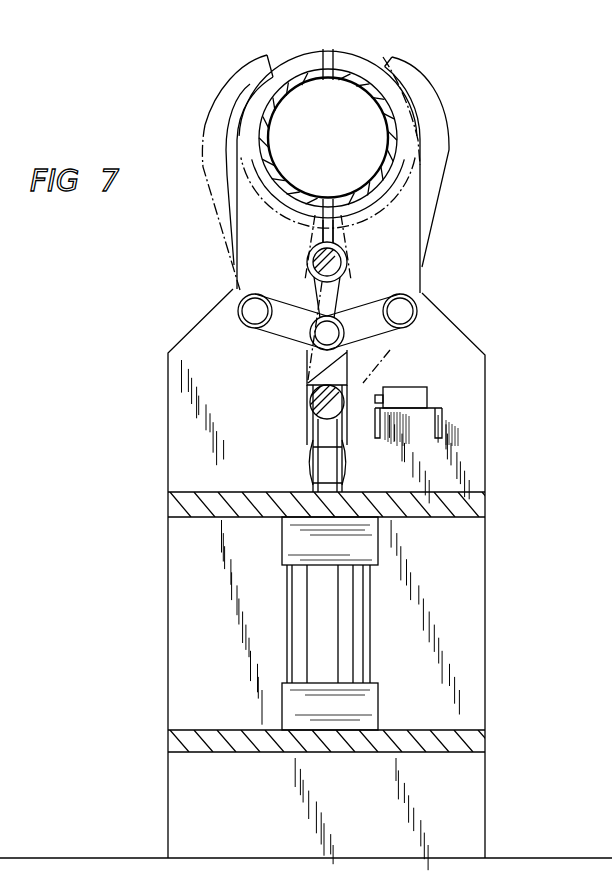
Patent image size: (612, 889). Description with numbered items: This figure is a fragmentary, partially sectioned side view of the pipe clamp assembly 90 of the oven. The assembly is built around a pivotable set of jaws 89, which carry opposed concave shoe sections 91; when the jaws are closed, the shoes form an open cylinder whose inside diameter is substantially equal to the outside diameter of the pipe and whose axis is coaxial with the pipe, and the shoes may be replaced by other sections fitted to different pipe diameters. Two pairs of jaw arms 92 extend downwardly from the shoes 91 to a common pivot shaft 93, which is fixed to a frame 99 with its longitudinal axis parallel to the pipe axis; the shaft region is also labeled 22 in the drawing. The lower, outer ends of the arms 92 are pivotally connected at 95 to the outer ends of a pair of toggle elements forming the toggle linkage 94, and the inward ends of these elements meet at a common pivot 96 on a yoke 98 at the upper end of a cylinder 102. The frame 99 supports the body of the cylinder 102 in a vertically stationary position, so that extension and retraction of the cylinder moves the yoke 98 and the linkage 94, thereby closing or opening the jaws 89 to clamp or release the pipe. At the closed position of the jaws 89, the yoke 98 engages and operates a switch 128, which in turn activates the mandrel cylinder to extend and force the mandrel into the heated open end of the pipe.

The jaws 89 is at (308, 52).
The pipe clamp assembly 90 is at (435, 198).
The shoe sections 91 is at (380, 125).
The jaw arms 92 is at (236, 256).
The pin shaft 22 is at (359, 234).
The common pivot shaft 93 is at (335, 262).
The toggle linkage 94 is at (385, 338).
The pivotal connection 95 is at (413, 315).
The common pivot 96 is at (317, 317).
The yoke 98 is at (310, 372).
The frame 99 is at (480, 436).
The cylinder 102 is at (364, 628).
The switch 128 is at (428, 396).